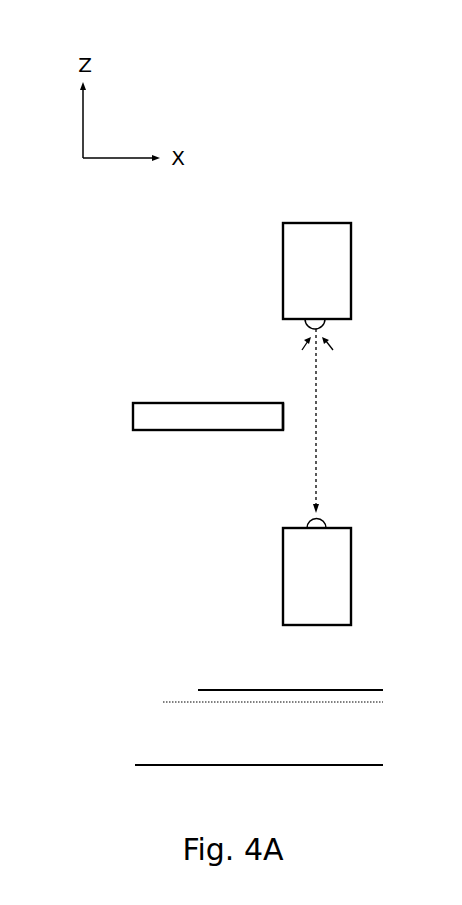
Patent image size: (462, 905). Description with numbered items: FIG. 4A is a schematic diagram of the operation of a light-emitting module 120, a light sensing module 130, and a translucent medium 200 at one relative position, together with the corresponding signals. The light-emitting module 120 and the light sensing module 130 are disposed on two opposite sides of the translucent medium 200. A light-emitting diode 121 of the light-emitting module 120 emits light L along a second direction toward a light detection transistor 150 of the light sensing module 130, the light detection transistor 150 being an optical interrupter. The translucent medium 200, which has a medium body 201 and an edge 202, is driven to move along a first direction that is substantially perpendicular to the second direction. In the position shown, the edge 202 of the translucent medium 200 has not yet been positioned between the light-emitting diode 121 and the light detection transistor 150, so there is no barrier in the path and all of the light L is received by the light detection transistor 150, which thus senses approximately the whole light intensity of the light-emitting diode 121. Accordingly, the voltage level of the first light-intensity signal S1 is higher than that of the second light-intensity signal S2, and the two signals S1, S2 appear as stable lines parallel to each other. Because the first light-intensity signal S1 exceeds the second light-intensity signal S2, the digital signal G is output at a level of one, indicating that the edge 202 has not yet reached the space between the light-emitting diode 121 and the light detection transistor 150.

The light-emitting module 120 is at (342, 223).
The light-emitting diode 121 is at (327, 326).
The light L is at (318, 379).
The translucent medium 200 is at (209, 476).
The medium body 201 is at (192, 432).
The edge 202 is at (285, 428).
The light sensing module 130 is at (342, 580).
The light detection transistor 150 is at (330, 525).
The first light-intensity signal S1 is at (277, 686).
The second light-intensity signal S2 is at (260, 703).
The digital signal G is at (248, 768).